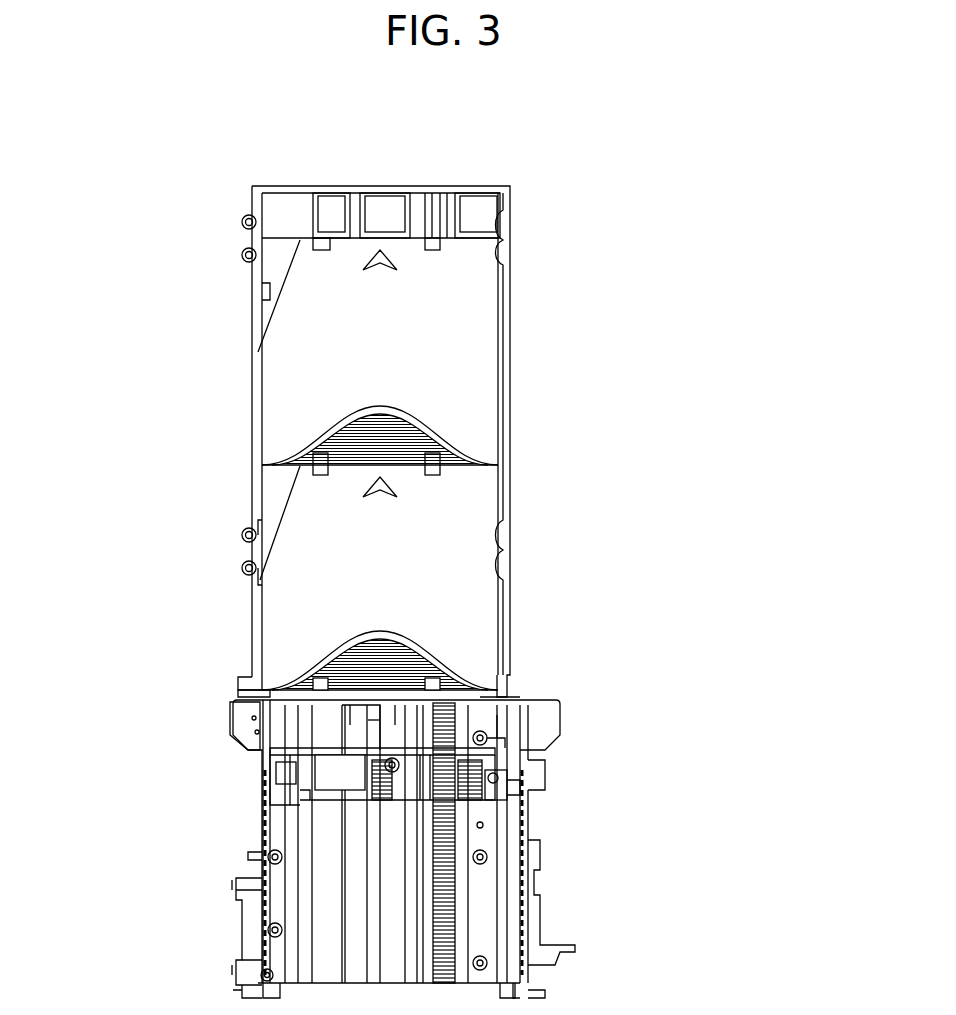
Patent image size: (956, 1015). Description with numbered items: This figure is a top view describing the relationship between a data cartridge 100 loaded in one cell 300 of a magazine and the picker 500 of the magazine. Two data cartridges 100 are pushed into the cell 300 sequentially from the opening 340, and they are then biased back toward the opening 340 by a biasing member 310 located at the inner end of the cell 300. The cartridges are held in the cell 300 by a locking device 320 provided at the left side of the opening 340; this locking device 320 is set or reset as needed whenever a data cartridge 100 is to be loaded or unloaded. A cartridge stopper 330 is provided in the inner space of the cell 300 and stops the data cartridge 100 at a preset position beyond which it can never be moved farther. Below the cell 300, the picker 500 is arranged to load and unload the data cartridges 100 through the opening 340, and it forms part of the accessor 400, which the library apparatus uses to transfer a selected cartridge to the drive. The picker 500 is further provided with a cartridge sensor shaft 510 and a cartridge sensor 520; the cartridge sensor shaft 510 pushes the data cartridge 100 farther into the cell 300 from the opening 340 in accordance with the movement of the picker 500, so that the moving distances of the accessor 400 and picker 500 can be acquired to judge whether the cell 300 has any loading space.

The data cartridge 100 is at (305, 353).
The cell 300 is at (504, 515).
The biasing member 310 is at (385, 185).
The locking device 320 is at (259, 701).
The cartridge stopper 330 is at (337, 234).
The opening 340 is at (503, 693).
The accessor 400 is at (568, 945).
The picker 500 is at (366, 805).
The cartridge sensor shaft 510 is at (487, 737).
The cartridge sensor 520 is at (470, 795).